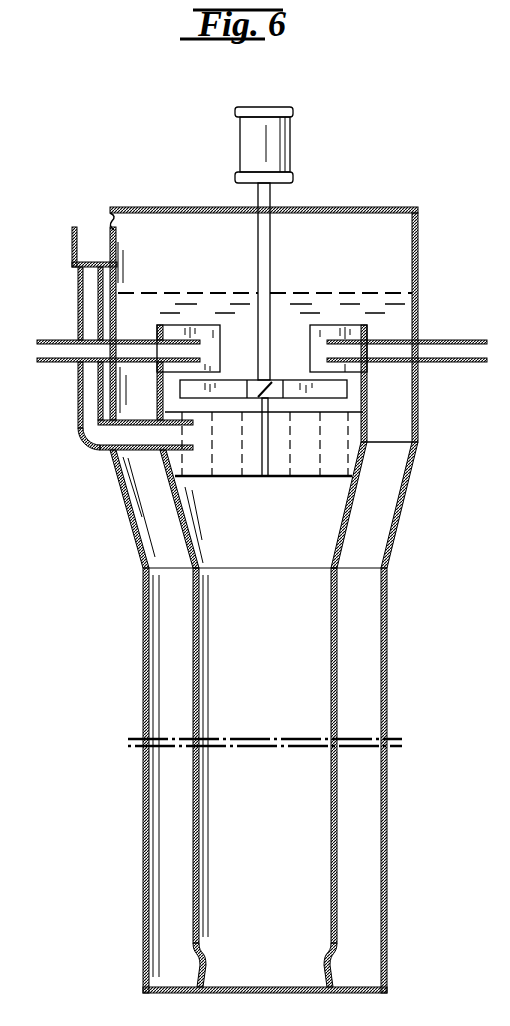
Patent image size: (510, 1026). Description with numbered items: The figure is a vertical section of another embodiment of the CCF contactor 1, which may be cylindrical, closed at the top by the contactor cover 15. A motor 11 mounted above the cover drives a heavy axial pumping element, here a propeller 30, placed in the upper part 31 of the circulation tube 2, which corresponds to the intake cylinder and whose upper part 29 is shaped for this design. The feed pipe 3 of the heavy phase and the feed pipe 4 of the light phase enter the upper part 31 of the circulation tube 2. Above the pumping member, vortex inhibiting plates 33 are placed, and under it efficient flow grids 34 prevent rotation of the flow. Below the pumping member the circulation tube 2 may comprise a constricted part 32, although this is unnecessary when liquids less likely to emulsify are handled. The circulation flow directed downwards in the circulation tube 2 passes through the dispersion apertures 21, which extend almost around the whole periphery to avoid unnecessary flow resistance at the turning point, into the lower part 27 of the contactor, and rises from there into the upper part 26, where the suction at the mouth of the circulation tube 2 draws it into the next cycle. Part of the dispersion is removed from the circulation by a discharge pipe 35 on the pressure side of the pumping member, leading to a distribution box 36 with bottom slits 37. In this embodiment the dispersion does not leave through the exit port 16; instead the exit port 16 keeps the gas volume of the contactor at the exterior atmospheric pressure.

The contactor 1 is at (385, 672).
The circulation tube 2 is at (337, 813).
The feed pipe of the heavy phase 3 is at (63, 353).
The feed pipe of the light phase 4 is at (460, 353).
The motor 11 is at (283, 139).
The contactor cover 15 is at (177, 207).
The exit port 16 is at (110, 218).
The dispersion apertures 21 is at (198, 968).
The upper part of the contactor 26 is at (398, 333).
The lower part of the contactor 27 is at (358, 865).
The upper part of the intake cylinder 29 is at (382, 508).
The propeller 30 is at (238, 385).
The upper part of the circulation tube 31 is at (292, 345).
The constricted part 32 is at (190, 530).
The vortex inhibiting plates 33 is at (200, 330).
The flow grids 34 is at (307, 462).
The discharge pipe 35 is at (103, 437).
The distribution box 36 is at (72, 242).
The bottom slits 37 is at (92, 270).